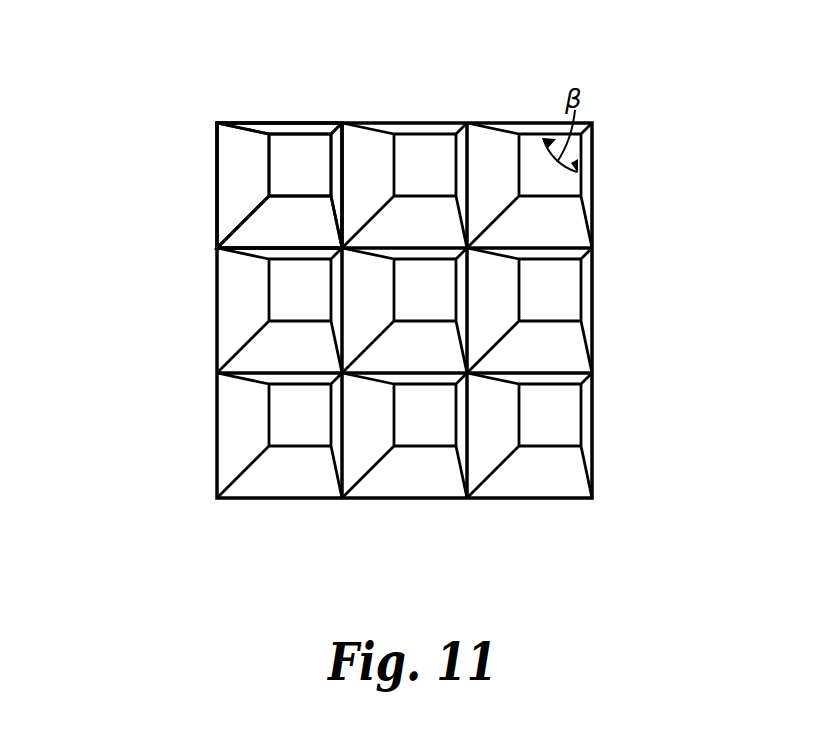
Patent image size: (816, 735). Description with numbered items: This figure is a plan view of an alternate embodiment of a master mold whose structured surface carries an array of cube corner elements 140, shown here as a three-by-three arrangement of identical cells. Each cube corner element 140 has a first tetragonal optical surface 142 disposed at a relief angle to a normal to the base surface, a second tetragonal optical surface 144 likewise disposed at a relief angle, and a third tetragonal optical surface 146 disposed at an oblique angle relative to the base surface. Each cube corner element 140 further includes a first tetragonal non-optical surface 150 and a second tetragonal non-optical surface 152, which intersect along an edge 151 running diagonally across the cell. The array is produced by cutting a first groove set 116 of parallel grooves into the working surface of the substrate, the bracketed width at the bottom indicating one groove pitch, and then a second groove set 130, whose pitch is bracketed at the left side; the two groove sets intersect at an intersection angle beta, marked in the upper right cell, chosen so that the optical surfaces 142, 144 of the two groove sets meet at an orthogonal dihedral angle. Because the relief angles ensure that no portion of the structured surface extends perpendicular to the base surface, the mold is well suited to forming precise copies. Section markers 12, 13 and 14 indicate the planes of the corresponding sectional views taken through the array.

The first groove set 116 is at (462, 505).
The second groove set 130 is at (215, 255).
The cube corner element 140 is at (224, 146).
The first tetragonal optical surface 142 is at (343, 148).
The second tetragonal optical surface 144 is at (290, 128).
The third tetragonal optical surface 146 is at (326, 176).
The first tetragonal non-optical surface 150 is at (265, 191).
The edge 151 is at (243, 222).
The second tetragonal non-optical surface 152 is at (324, 235).
The section line 12- 12 is at (92, 368).
The section line 13- 13 is at (467, 25).
The section line 14- 14 is at (318, 518).